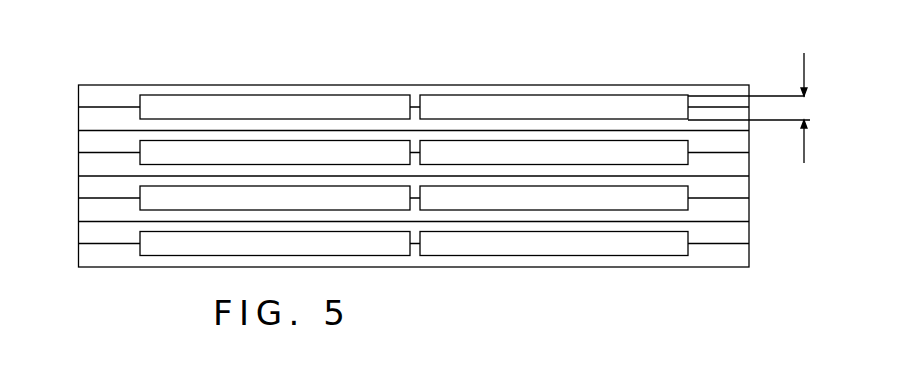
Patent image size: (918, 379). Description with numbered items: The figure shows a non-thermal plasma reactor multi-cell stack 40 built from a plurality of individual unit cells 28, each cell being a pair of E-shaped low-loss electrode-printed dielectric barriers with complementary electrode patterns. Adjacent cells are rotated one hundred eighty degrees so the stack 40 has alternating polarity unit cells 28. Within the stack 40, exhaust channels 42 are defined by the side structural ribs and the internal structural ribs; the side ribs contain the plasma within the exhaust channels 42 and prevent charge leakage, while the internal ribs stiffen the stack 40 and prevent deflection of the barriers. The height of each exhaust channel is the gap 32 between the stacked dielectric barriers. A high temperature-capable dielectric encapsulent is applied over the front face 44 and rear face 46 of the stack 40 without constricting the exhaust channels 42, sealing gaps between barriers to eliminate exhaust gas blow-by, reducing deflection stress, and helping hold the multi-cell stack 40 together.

The individual unit cell 28 is at (750, 247).
The gap 32 is at (805, 108).
The non-thermal plasma reactor multi-cell stack 40 is at (508, 286).
The exhaust channels 42 is at (297, 108).
The front face 44 is at (112, 118).
The rear face 46 is at (115, 97).